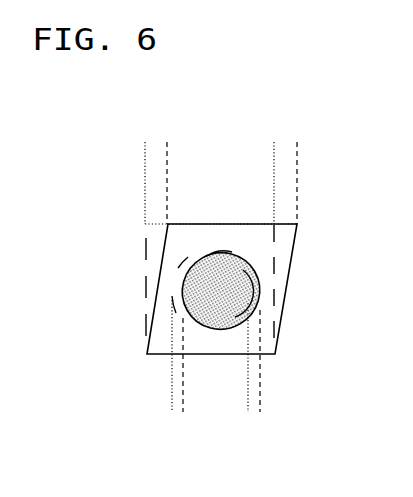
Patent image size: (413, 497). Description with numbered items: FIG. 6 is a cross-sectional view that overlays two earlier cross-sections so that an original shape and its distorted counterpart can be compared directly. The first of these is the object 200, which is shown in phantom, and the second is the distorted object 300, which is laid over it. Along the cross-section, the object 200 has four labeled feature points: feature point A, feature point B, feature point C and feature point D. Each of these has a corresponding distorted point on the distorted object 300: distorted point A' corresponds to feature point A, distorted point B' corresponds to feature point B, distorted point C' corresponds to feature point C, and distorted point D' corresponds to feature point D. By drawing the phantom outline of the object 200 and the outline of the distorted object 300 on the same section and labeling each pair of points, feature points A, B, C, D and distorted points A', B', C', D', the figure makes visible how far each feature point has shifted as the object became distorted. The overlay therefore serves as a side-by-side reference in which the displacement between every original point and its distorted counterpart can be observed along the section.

The object 200 is at (134, 267).
The distorted object 300 is at (306, 267).
The feature point A is at (145, 171).
The distorted point A' is at (173, 171).
The feature point B is at (273, 171).
The distorted point B' is at (301, 171).
The feature point C is at (171, 369).
The distorted point C' is at (193, 378).
The feature point D is at (249, 371).
The distorted point D' is at (271, 374).